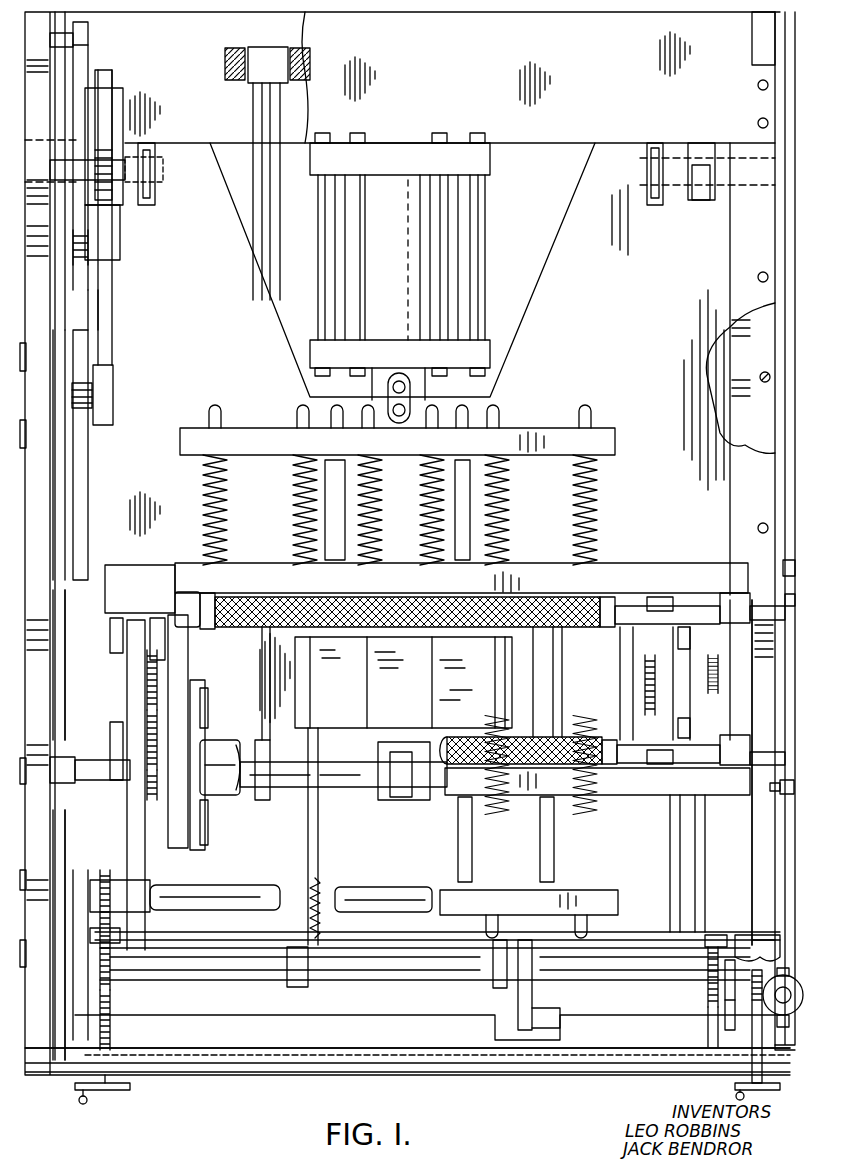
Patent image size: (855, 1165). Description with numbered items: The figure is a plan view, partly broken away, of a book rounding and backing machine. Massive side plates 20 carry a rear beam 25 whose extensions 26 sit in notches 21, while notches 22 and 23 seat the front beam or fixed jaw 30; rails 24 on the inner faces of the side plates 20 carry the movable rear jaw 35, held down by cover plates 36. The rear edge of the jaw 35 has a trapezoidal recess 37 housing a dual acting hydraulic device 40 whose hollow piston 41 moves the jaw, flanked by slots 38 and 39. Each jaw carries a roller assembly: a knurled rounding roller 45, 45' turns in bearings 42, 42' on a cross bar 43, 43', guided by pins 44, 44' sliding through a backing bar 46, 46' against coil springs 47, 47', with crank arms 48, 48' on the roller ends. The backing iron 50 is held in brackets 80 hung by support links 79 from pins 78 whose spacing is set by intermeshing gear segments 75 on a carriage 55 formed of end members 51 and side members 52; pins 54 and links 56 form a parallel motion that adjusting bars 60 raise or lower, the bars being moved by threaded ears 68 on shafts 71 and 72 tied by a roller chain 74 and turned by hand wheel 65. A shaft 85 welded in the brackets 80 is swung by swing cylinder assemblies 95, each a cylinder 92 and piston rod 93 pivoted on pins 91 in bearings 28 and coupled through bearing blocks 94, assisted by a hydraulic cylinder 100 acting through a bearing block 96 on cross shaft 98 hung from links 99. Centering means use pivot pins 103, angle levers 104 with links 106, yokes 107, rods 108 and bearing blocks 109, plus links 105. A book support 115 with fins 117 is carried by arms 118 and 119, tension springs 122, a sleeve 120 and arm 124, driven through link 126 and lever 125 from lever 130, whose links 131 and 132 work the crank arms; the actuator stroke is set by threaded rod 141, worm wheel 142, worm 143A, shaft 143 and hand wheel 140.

The side plate 20 is at (805, 400).
The notch 21 is at (77, 45).
The notch 22 is at (66, 868).
The notch 23 is at (40, 698).
The rail 24 is at (95, 275).
The rear beam 25 is at (752, 60).
The extension 26 is at (770, 110).
The bearing 28 is at (232, 48).
The front beam or fixed jaw 30 is at (788, 875).
The movable rear jaw 35 is at (615, 316).
The cover plate 36 is at (755, 245).
The trapezoidal central recess 37 is at (560, 216).
The slot 38 is at (150, 205).
The slot 39 is at (705, 200).
The dual acting hydraulic device 40 is at (398, 185).
The hollow piston 41 is at (385, 370).
The bearing 42 is at (698, 735).
The bearing 42' is at (445, 583).
The cross bar 43 is at (597, 796).
The cross bar 43' is at (426, 576).
The guide pin 44 is at (576, 796).
The guide pin 44' is at (563, 510).
The book clamping and rounding roller 45 is at (580, 765).
The book clamping and rounding roller 45' is at (460, 584).
The backing bar 46 is at (549, 914).
The backing bar 46' is at (397, 422).
The coil spring 47 is at (553, 786).
The coil spring 47' is at (375, 510).
The crank arm 48 is at (787, 759).
The crank arm 48' is at (789, 604).
The backing iron 50 is at (230, 740).
The end member 51 is at (235, 955).
The side member 52 is at (138, 862).
The pin 54 is at (95, 390).
The carriage 55 is at (125, 841).
The link 56 is at (80, 462).
The adjusting bar 60 is at (735, 694).
The hand wheel 65 is at (105, 1092).
The threaded ear 68 is at (120, 940).
The left hand shaft 71 is at (110, 1003).
The right hand shaft 72 is at (708, 1000).
The roller chain 74 is at (405, 1050).
The gear segment 75 is at (147, 700).
The pin 78 is at (180, 668).
The support link 79 is at (208, 708).
The bracket 80 is at (206, 686).
The shaft 85 is at (365, 728).
The pin 91 is at (274, 50).
The cylinder 92 is at (255, 124).
The piston rod 93 is at (262, 655).
The bearing block 94 is at (270, 765).
The swing cylinder assembly 95 is at (258, 228).
The bearing block 96 is at (400, 800).
The cross shaft 98 is at (95, 770).
The link 99 is at (55, 768).
The hydraulic cylinder 100 is at (380, 800).
The pivot pin 103 is at (100, 160).
The angle lever 104 is at (110, 82).
The link 105 is at (156, 192).
The link 106 is at (82, 70).
The yoke 107 is at (70, 168).
The rod 108 is at (110, 322).
The bearing block 109 is at (110, 375).
The book support 115 is at (403, 682).
The fin 117 is at (368, 680).
The arm 118 is at (320, 740).
The arm 119 is at (298, 945).
The sleeve 120 is at (478, 978).
The tension spring 122 is at (325, 885).
The arm 124 is at (535, 1000).
The lever 125 is at (550, 1035).
The link 126 is at (562, 1022).
The lever 130 is at (785, 935).
The link 131 is at (800, 792).
The link 132 is at (795, 565).
The hand wheel 140 is at (780, 1085).
The threaded rod 141 is at (790, 1000).
The worm wheel 142 is at (806, 990).
The shaft 143 is at (764, 1056).
The worm 143A is at (752, 1010).